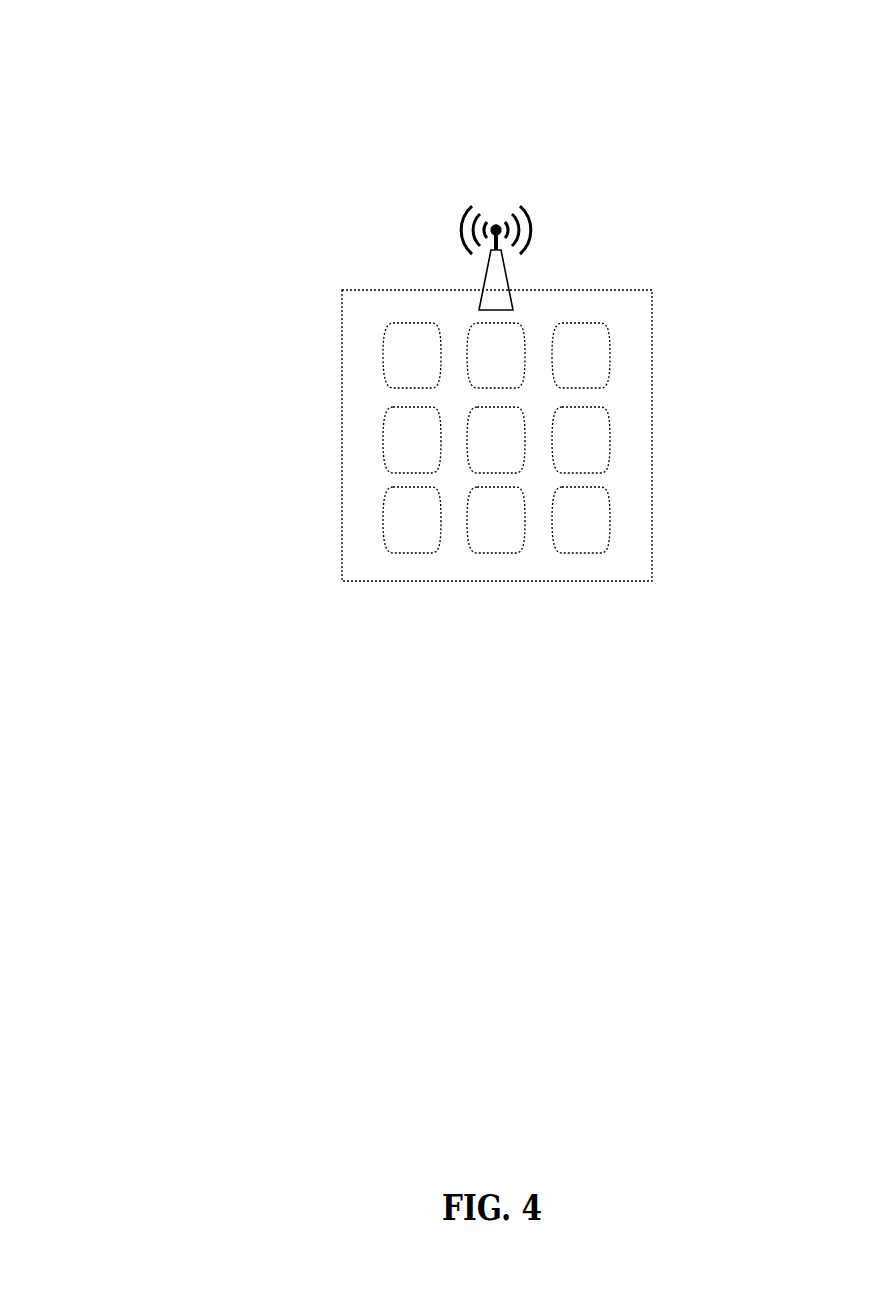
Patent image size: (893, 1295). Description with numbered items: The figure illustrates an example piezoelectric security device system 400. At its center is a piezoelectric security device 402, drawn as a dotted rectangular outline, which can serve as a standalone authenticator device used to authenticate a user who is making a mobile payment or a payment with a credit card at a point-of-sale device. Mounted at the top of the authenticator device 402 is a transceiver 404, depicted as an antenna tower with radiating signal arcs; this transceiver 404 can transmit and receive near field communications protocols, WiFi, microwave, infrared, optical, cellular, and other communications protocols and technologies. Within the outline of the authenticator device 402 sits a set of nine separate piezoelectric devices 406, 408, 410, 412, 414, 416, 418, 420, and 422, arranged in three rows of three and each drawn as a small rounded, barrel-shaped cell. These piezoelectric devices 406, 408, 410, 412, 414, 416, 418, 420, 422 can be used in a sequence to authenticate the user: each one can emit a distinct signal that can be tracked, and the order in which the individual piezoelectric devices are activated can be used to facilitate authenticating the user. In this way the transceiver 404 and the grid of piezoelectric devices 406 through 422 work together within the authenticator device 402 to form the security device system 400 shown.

The piezoelectric security device system 400 is at (125, 63).
The piezoelectric security device 402 is at (632, 290).
The transceiver 404 is at (530, 210).
The piezoelectric device 406 is at (412, 355).
The piezoelectric device 408 is at (496, 355).
The piezoelectric device 410 is at (581, 355).
The piezoelectric device 412 is at (412, 440).
The piezoelectric device 414 is at (496, 440).
The piezoelectric device 416 is at (581, 440).
The piezoelectric device 418 is at (412, 520).
The piezoelectric device 420 is at (496, 520).
The piezoelectric device 422 is at (581, 520).